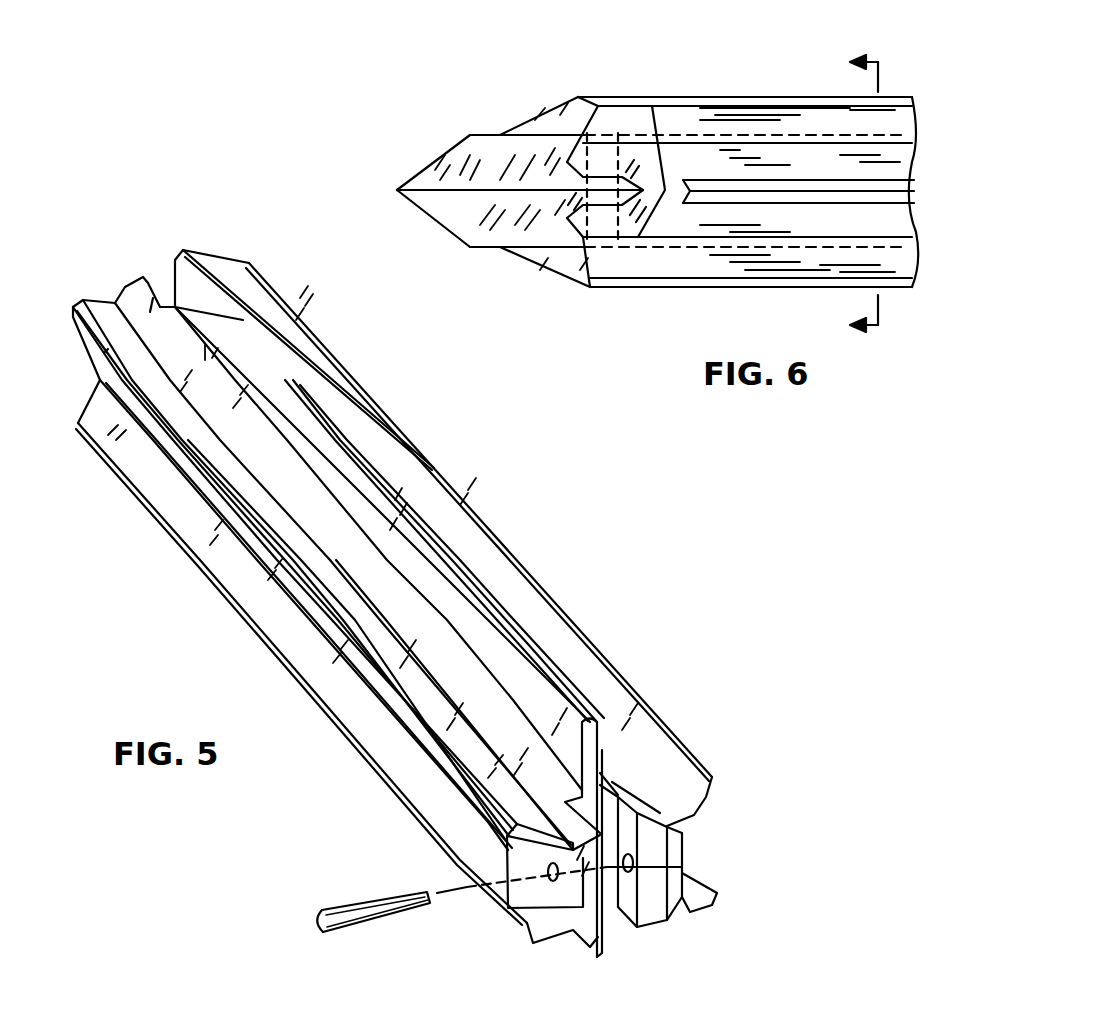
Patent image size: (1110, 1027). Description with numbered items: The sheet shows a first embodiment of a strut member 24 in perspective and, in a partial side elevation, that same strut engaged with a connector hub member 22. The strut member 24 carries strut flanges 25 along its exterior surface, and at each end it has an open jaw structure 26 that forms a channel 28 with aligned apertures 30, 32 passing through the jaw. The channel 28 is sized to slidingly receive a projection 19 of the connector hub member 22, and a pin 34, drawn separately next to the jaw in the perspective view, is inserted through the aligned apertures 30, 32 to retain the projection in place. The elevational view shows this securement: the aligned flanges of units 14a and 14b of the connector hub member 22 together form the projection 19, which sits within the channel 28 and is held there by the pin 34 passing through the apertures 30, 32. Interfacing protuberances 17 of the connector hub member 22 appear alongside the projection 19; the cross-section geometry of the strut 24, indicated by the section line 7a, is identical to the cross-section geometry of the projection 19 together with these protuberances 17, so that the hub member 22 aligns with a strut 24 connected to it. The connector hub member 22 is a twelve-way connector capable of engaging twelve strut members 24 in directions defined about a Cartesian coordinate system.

In FIG. 5, the strut member 24 is at (297, 280).
In FIG. 6, the strut member 24 is at (745, 97).
In FIG. 5, the strut flanges 25 is at (105, 352).
In FIG. 5, the open jaw structure 26 is at (682, 833).
In FIG. 5, the channel 28 is at (623, 917).
In FIG. 5, the aperture 30 is at (510, 912).
In FIG. 5, the aperture 32 is at (682, 867).
In FIG. 5, the pin 34 is at (352, 928).
In FIG. 6, the connector hub member 22 is at (470, 122).
In FIG. 6, the interfacing protuberances 17 is at (598, 97).
In FIG. 6, the unit 14a is at (636, 170).
In FIG. 6, the unit 14b is at (638, 240).
In FIG. 6, the projection 19 is at (652, 178).
In FIG. 6, the section line 7a is at (871, 197).